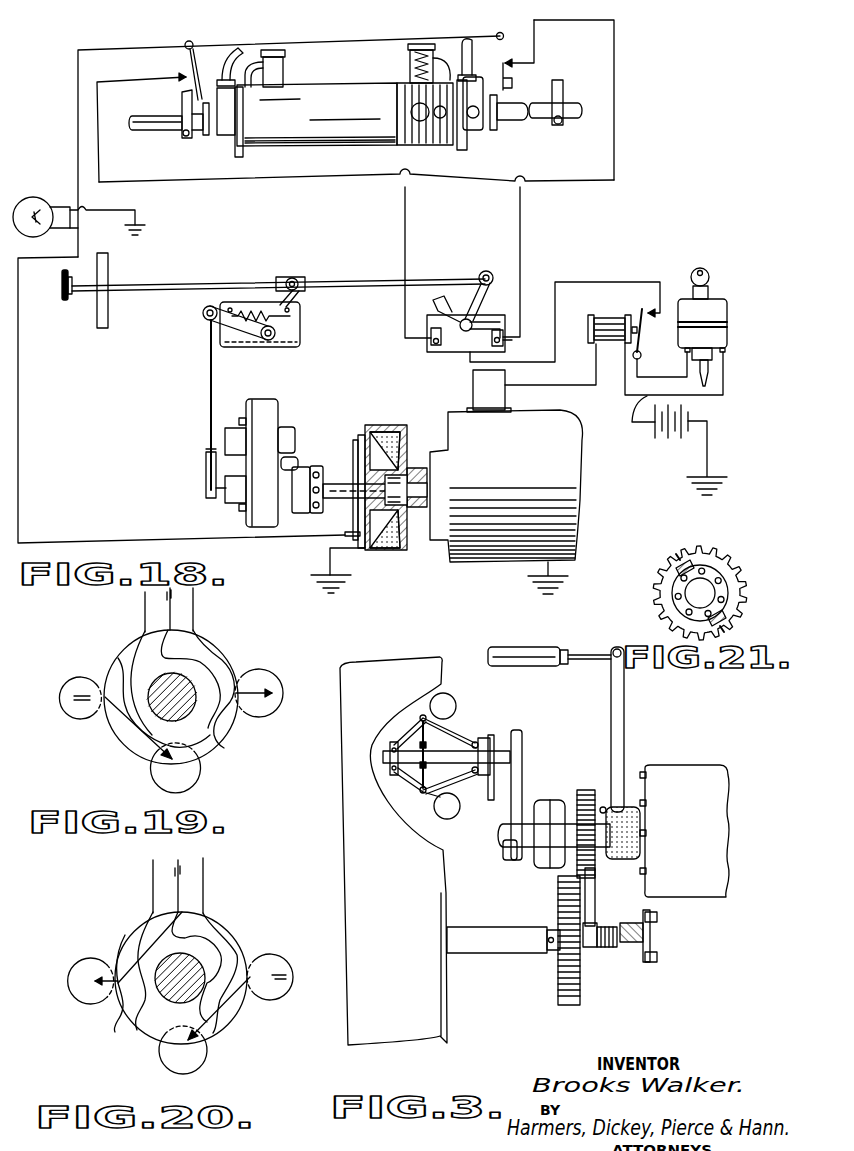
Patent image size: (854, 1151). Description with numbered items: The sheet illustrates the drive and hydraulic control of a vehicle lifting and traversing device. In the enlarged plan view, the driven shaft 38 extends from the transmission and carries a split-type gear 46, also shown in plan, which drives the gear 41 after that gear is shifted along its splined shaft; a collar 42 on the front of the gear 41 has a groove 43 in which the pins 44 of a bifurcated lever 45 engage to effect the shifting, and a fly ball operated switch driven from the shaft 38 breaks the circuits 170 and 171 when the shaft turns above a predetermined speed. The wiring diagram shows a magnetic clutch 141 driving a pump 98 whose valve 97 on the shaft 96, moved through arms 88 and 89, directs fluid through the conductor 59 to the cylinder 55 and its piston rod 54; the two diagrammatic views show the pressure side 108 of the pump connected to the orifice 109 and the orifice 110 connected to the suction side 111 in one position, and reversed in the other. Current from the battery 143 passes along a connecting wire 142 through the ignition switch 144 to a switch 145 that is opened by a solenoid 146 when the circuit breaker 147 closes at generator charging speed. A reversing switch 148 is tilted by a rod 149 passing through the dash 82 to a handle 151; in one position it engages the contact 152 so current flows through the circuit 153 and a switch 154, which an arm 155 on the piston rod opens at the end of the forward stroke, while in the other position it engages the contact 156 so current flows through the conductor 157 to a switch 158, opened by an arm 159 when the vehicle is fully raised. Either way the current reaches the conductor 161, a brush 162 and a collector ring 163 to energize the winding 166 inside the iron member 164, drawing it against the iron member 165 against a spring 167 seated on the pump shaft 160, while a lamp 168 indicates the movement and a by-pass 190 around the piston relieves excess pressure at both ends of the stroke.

In FIG. 3, the driven shaft 38 is at (568, 800).
In FIG. 3, the gear 41 is at (565, 1006).
In FIG. 3, the collar 42 is at (583, 1006).
In FIG. 3, the groove 43 is at (592, 948).
In FIG. 3, the pins 44 is at (598, 935).
In FIG. 3, the bifurcated lever 45 is at (595, 900).
In FIG. 21, the gear 46 is at (730, 566).
In FIG. 3, the gear 46 is at (588, 790).
In FIG. 18, the piston rod 54 is at (168, 131).
In FIG. 18, the cylinder 55 is at (357, 100).
In FIG. 3, the conductor 59 is at (631, 944).
In FIG. 18, the dash 82 is at (107, 272).
In FIG. 18, the arm 88 is at (290, 306).
In FIG. 18, the arm 89 is at (247, 328).
In FIG. 19, the shaft 96 is at (190, 690).
In FIG. 20, the shaft 96 is at (137, 1030).
In FIG. 19, the valve 97 is at (222, 740).
In FIG. 20, the valve 97 is at (217, 927).
In FIG. 18, the pump 98 is at (268, 528).
In FIG. 19, the pressure side 108 is at (193, 600).
In FIG. 20, the pressure side 108 is at (203, 871).
In FIG. 19, the orifice 109 is at (78, 713).
In FIG. 20, the orifice 109 is at (85, 964).
In FIG. 19, the orifice 110 is at (262, 672).
In FIG. 20, the orifice 110 is at (275, 960).
In FIG. 19, the suction side 111 is at (190, 773).
In FIG. 20, the suction side 111 is at (196, 1060).
In FIG. 18, the magnetic clutch 141 is at (397, 549).
In FIG. 18, the wire 142 is at (645, 404).
In FIG. 18, the battery 143 is at (675, 437).
In FIG. 18, the ignition switch 144 is at (722, 307).
In FIG. 18, the switch 145 is at (638, 315).
In FIG. 18, the solenoid 146 is at (590, 315).
In FIG. 18, the circuit breaker 147 is at (507, 385).
In FIG. 18, the reversing switch 148 is at (490, 285).
In FIG. 18, the rod 149 is at (240, 283).
In FIG. 18, the handle 151 is at (67, 301).
In FIG. 18, the contact 152 is at (540, 338).
In FIG. 18, the circuit 153 is at (326, 175).
In FIG. 18, the switch 154 is at (198, 60).
In FIG. 18, the arm 155 is at (182, 110).
In FIG. 18, the contact 156 is at (427, 338).
In FIG. 18, the conductor 157 is at (620, 155).
In FIG. 18, the switch 158 is at (503, 33).
In FIG. 18, the arm 159 is at (553, 80).
In FIG. 18, the pump shaft 160 is at (333, 485).
In FIG. 18, the conductor 161 is at (78, 130).
In FIG. 18, the brush 162 is at (357, 533).
In FIG. 18, the collector ring 163 is at (355, 447).
In FIG. 3, the collector ring 163 is at (450, 728).
In FIG. 18, the iron member 164 is at (361, 440).
In FIG. 18, the iron member 165 is at (410, 427).
In FIG. 18, the winding 166 is at (390, 425).
In FIG. 18, the spring 167 is at (400, 458).
In FIG. 18, the indicating means 168 is at (32, 199).
In FIG. 3, the indicating means 168 is at (442, 818).
In FIG. 3, the circuit 170 is at (490, 798).
In FIG. 3, the circuit 171 is at (491, 800).
In FIG. 18, the by-pass 190 is at (284, 63).